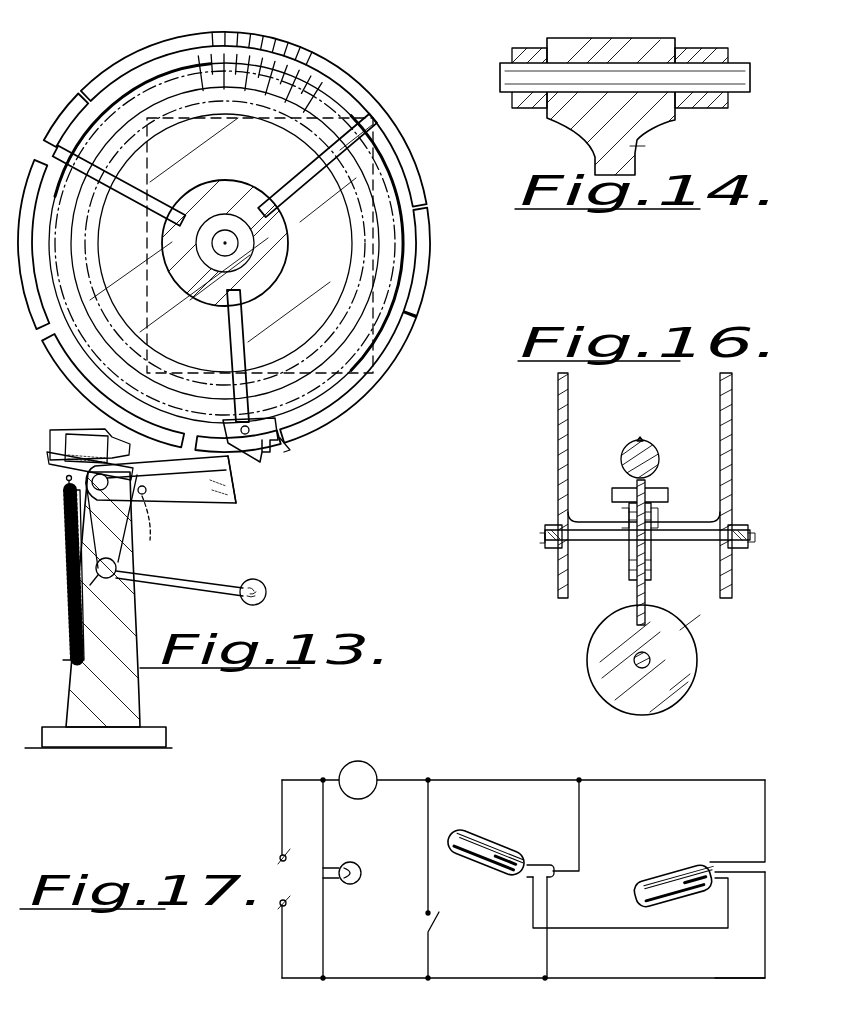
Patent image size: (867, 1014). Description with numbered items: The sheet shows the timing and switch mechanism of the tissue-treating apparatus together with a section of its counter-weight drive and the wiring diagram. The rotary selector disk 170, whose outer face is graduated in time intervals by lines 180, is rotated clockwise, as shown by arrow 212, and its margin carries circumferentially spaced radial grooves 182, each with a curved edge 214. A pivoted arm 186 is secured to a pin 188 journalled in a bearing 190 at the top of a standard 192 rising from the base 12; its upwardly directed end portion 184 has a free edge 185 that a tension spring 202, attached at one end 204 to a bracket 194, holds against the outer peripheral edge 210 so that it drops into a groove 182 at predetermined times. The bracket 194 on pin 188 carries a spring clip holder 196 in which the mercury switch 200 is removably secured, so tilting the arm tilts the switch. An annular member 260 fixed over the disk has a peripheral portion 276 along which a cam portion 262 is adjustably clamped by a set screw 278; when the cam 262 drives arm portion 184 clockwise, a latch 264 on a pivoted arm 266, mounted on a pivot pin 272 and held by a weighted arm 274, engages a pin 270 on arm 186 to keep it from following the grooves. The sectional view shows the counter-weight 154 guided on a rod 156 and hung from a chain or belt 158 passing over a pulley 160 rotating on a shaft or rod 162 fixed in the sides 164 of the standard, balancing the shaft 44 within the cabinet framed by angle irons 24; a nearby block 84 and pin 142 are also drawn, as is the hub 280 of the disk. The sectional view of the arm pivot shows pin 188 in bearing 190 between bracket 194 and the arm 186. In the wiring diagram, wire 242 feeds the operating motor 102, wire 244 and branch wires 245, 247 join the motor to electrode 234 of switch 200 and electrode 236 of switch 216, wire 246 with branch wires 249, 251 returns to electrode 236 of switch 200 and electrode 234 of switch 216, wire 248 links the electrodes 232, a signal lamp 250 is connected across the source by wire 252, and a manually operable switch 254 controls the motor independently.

In FIG. 13, the base 12 is at (172, 747).
In FIG. 16, the angle irons 24 is at (744, 474).
In FIG. 16, the shaft 44 is at (656, 452).
In FIG. 16, the block 84 is at (663, 491).
In FIG. 17, the operating motor 102 is at (372, 770).
In FIG. 16, the pin 142 is at (640, 440).
In FIG. 16, the counter-weight 154 is at (690, 675).
In FIG. 16, the rod 156 is at (652, 658).
In FIG. 16, the chain or belt 158 is at (648, 597).
In FIG. 16, the rotary pulley 160 is at (632, 565).
In FIG. 16, the shaft or rod 162 is at (683, 541).
In FIG. 16, the sides of standard 164 is at (558, 438).
In FIG. 13, the rotary selector disk 170 is at (388, 294).
In FIG. 13, the lines 180 is at (292, 55).
In FIG. 13, the radial grooves 182 is at (84, 96).
In FIG. 13, the end portion of arm 184 is at (232, 480).
In FIG. 13, the free edge 185 is at (228, 457).
In FIG. 13, the pivoted arm 186 is at (206, 509).
In FIG. 14, the pivoted arm 186 is at (700, 46).
In FIG. 14, the pin 188 is at (580, 72).
In FIG. 14, the bearing 190 is at (638, 64).
In FIG. 13, the standard 192 is at (125, 690).
In FIG. 13, the bracket 194 is at (51, 479).
In FIG. 14, the bracket 194 is at (514, 50).
In FIG. 13, the spring clip holder 196 is at (76, 432).
In FIG. 13, the mercury switch 200 is at (49, 441).
In FIG. 17, the mercury switch 200 is at (475, 819).
In FIG. 13, the tension spring 202 is at (60, 540).
In FIG. 13, the spring end 204 is at (68, 481).
In FIG. 13, the outer peripheral edge 210 is at (332, 418).
In FIG. 13, the arrow 212 is at (383, 406).
In FIG. 13, the curved edge 214 is at (70, 103).
In FIG. 17, the mercury switch 216 is at (652, 871).
In FIG. 17, the electrode 232 is at (478, 862).
In FIG. 17, the central electrode 234 is at (528, 876).
In FIG. 17, the electrode 236 is at (496, 853).
In FIG. 17, the wire 242 is at (282, 814).
In FIG. 17, the wire 244 is at (475, 778).
In FIG. 17, the branch wire 245 is at (582, 803).
In FIG. 17, the wire 246 is at (523, 893).
In FIG. 17, the branch wire 247 is at (765, 806).
In FIG. 17, the wire 248 is at (615, 930).
In FIG. 17, the branch wire 249 is at (548, 958).
In FIG. 17, the signal lamp 250 is at (350, 862).
In FIG. 17, the branch wire 251 is at (765, 957).
In FIG. 17, the wire 252 is at (325, 926).
In FIG. 17, the manually operable switch 254 is at (437, 927).
In FIG. 13, the annular member 260 is at (418, 262).
In FIG. 13, the cam portion 262 is at (262, 463).
In FIG. 13, the latch 264 is at (151, 540).
In FIG. 13, the pivoted arm 266 is at (120, 562).
In FIG. 13, the pin 270 is at (147, 496).
In FIG. 13, the pivot pin 272 is at (98, 577).
In FIG. 13, the weighted arm 274 is at (168, 586).
In FIG. 13, the peripheral portion 276 is at (390, 184).
In FIG. 13, the set screw 278 is at (286, 445).
In FIG. 13, the hub 280 is at (280, 238).